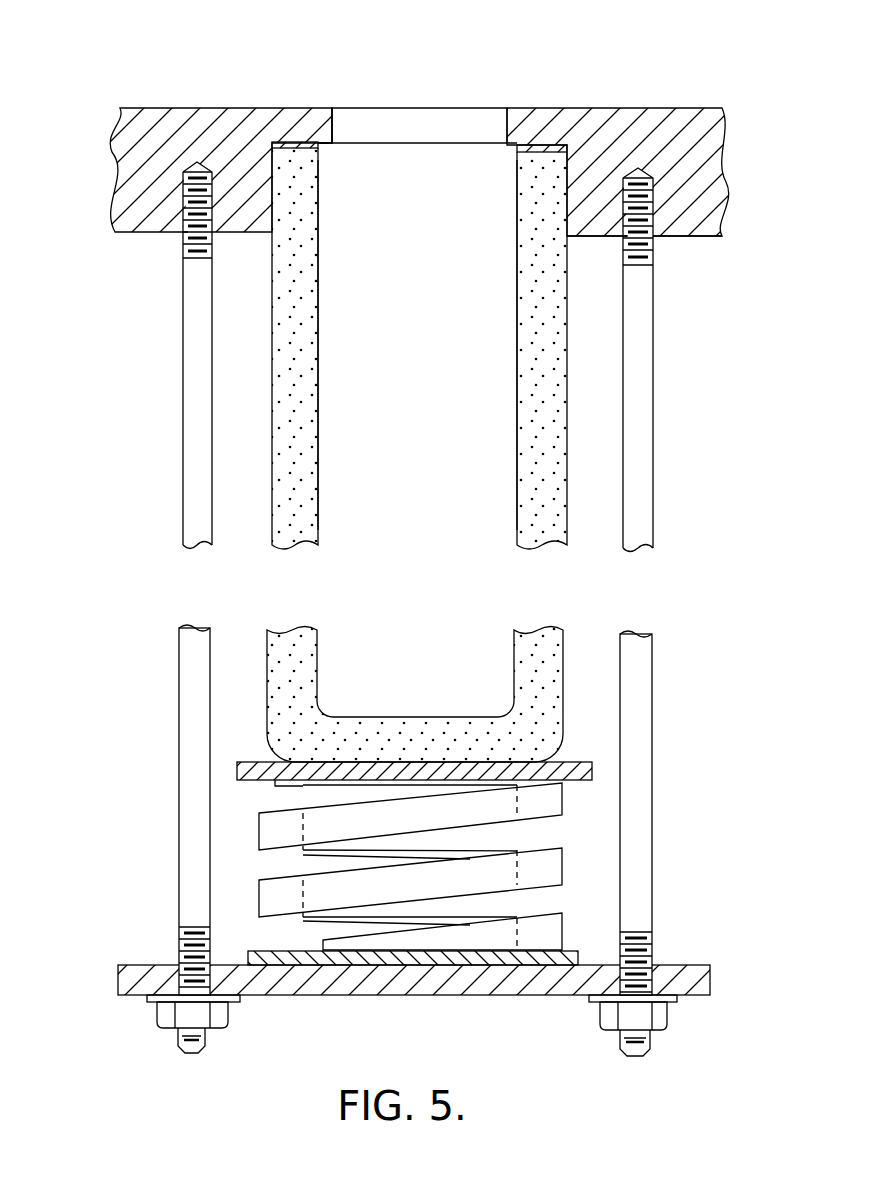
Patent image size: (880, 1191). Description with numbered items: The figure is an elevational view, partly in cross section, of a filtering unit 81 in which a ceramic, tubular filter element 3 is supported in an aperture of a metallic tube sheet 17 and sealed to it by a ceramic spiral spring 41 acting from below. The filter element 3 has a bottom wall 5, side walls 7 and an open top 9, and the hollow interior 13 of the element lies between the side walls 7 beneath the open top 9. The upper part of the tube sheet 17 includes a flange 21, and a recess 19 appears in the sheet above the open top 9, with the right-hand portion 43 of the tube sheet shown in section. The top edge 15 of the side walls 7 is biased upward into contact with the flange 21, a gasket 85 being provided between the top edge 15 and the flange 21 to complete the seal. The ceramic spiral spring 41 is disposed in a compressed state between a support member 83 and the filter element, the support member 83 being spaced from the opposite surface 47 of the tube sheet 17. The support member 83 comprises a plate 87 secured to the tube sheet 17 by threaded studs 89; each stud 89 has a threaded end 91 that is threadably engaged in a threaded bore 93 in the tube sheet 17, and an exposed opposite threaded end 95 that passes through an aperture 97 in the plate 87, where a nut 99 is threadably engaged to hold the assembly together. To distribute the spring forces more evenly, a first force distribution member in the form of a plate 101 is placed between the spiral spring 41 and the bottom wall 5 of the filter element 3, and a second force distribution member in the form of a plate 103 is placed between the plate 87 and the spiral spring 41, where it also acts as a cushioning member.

The ceramic tubular filter element 3 is at (416, 286).
The bottom wall 5 is at (394, 712).
The side walls 7 is at (549, 437).
The open top 9 is at (386, 152).
The space 13 is at (403, 379).
The top edge 15 is at (285, 146).
The tube sheet 17 is at (148, 140).
The recess 19 is at (468, 96).
The flange 21 is at (318, 125).
The ceramic spiral spring 41 is at (259, 830).
The upper plate right portion 43 is at (615, 108).
The opposite surface 47 is at (676, 238).
The filtering unit 81 is at (686, 409).
The support member 83 is at (183, 854).
The gasket 85 is at (516, 152).
The plate 87 is at (343, 987).
The threaded studs 89 is at (180, 678).
The threaded end 91 is at (193, 243).
The threaded bores 93 is at (148, 355).
The exposed opposite threaded end 95 is at (176, 1040).
The apertures 97 is at (215, 948).
The nuts 99 is at (222, 1013).
The plate 101 is at (327, 767).
The plate 103 is at (467, 977).